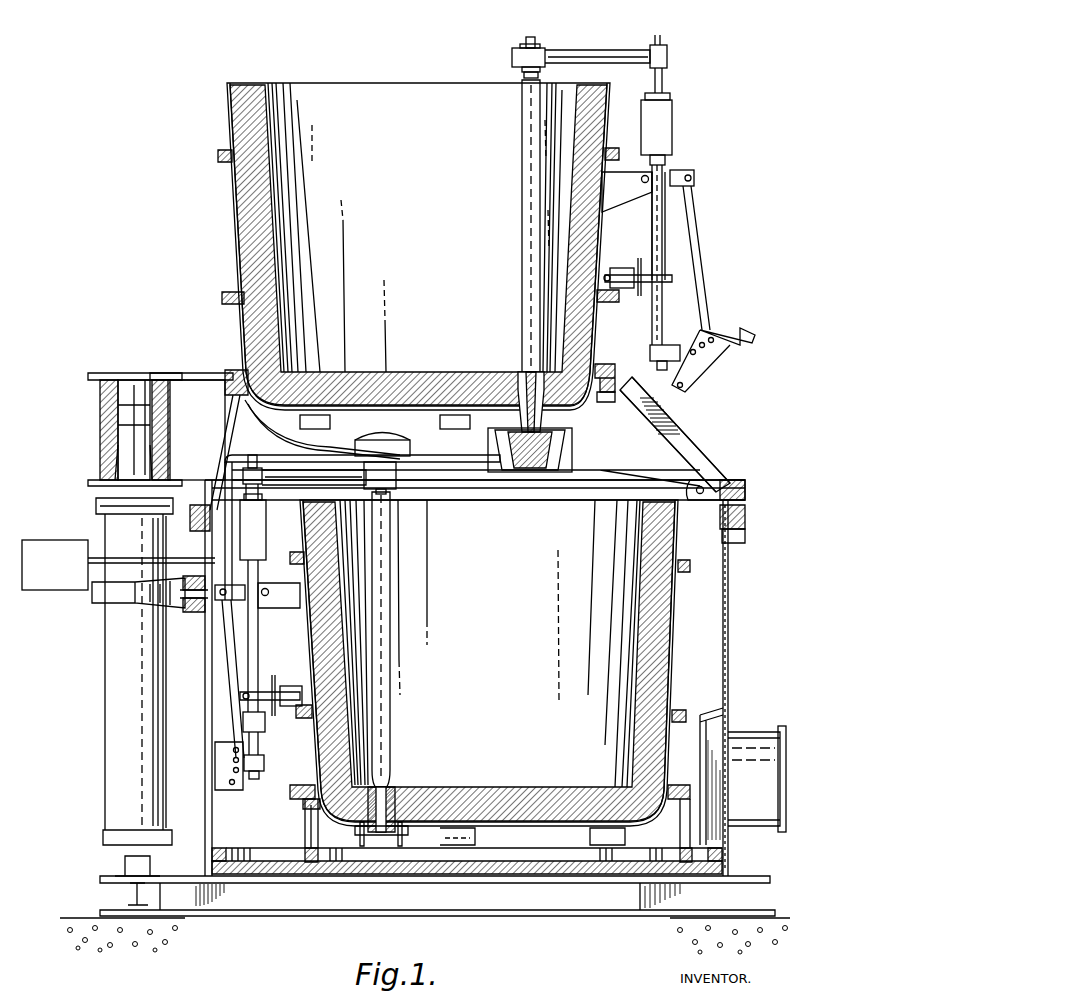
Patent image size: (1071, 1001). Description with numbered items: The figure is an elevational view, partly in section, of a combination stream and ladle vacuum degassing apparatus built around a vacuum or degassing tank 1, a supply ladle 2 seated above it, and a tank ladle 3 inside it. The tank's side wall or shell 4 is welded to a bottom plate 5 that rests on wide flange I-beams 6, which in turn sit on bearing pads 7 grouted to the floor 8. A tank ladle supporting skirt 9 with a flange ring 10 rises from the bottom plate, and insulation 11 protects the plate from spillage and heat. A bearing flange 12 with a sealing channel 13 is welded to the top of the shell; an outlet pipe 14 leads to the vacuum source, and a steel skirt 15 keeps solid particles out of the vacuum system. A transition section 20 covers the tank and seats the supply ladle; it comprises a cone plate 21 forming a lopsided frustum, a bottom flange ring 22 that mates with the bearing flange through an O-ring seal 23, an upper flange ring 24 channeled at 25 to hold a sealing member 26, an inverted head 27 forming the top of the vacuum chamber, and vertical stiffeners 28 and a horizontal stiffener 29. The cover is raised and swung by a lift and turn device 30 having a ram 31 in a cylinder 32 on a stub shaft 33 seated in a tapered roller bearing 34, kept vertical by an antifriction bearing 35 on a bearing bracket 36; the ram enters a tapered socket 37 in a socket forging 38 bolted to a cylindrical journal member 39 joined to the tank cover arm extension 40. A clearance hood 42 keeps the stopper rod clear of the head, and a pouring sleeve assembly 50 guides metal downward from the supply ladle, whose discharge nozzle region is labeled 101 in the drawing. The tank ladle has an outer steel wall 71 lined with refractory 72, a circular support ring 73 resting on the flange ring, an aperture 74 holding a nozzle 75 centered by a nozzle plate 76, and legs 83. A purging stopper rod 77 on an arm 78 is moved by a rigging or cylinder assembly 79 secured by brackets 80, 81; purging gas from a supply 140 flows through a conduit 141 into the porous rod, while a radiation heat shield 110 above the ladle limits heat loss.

The vacuum or degassing tank 1 is at (732, 581).
The supply ladle 2 is at (230, 190).
The tank ladle 3 is at (678, 640).
The side wall or shell 4 is at (730, 680).
The bottom plate 5 is at (732, 872).
The wide flange I-beams or supporting members 6 is at (735, 897).
The bearing pads 7 is at (100, 910).
The floor 8 is at (140, 935).
The tank ladle supporting skirt 9 is at (305, 828).
The flange ring 10 is at (300, 805).
The insulation 11 is at (262, 835).
The bearing flange 12 is at (745, 532).
The sealing channel 13 is at (746, 516).
The outlet pipe 14 is at (750, 732).
The steel skirt 15 is at (712, 712).
The transition section 20 is at (690, 425).
The cone plate 21 is at (700, 452).
The bottom flange ring 22 is at (205, 475).
The O-ring seal 23 is at (205, 530).
The upper flange ring 24 is at (222, 395).
The channel 25 is at (222, 372).
The sealing member 26 is at (606, 400).
The inverted head 27 is at (320, 448).
The vertical stiffeners 28 is at (664, 418).
The horizontal stiffener 29 is at (722, 464).
The lift and turn device 30 is at (98, 684).
The ram 31 is at (113, 480).
The cylinder 32 is at (112, 758).
The stub shaft 33 is at (125, 853).
The tapered roller bearing 34 is at (125, 860).
The antifriction bearing 35 is at (98, 604).
The bearing bracket 36 is at (200, 615).
The tapered socket 37 is at (100, 468).
The socket forging 38 is at (103, 398).
The cylindrical journal member 39 is at (103, 427).
The lifting bracket or tank cover arm extension 40 is at (195, 372).
The clearance hood 42 is at (400, 438).
The pouring sleeve assembly 50 is at (572, 440).
The outer steel wall 71 is at (232, 242).
The refractory 72 is at (243, 84).
The circular support ring 73 is at (612, 366).
The aperture 74 is at (395, 800).
The nozzle 75 is at (388, 850).
The nozzle plate 76 is at (362, 850).
The purging stopper rod 77 is at (522, 190).
The arm 78 is at (610, 55).
The rigging or cylinder assembly 79 is at (705, 250).
The bracket 80 is at (644, 195).
The bracket 81 is at (608, 272).
The legs 83 is at (585, 836).
The upper nozzle 101 is at (520, 375).
The radiation heat shield 110 is at (447, 476).
The source of purging gas supply 140 is at (72, 588).
The conduit 141 is at (226, 458).